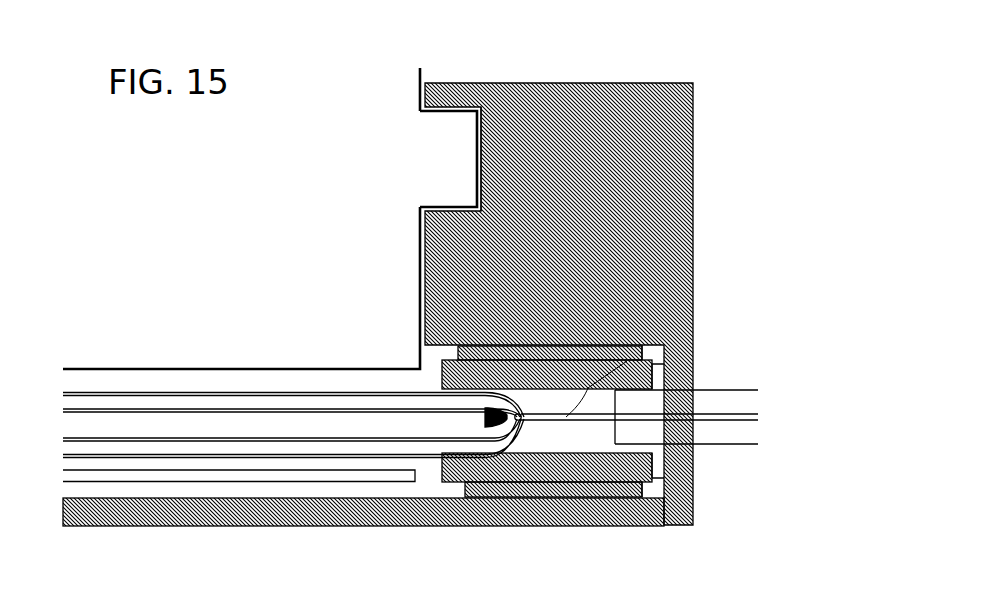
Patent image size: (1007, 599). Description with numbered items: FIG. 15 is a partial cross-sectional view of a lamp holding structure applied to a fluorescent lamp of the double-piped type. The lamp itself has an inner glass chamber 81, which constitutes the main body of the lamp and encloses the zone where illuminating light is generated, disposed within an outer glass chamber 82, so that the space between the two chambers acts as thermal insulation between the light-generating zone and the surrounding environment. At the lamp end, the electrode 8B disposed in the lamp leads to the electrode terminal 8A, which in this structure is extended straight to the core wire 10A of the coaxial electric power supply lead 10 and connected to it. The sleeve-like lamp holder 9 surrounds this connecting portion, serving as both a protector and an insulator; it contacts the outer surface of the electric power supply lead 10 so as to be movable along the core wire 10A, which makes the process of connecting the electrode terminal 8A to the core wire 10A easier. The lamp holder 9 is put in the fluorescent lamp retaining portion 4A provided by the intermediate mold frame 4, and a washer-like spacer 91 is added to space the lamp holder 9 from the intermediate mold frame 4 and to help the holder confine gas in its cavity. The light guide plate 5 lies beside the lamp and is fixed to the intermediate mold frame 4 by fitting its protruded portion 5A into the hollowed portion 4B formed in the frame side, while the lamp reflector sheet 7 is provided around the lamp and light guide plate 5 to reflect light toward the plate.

The intermediate mold frame 4 is at (582, 188).
The fluorescent lamp retaining portion 4A is at (196, 491).
The hollowed portion 4B is at (482, 129).
The light guide plate 5 is at (242, 188).
The protruded portion 5A is at (455, 178).
The lamp reflector sheet 7 is at (122, 478).
The glass chamber 81 is at (270, 441).
The glass chamber 82 is at (327, 458).
The electrode terminal 8A is at (662, 350).
The electrode 8B is at (484, 417).
The lamp holder 9 is at (538, 462).
The washer-like spacer 91 is at (442, 360).
The electric power supply lead 10 is at (705, 438).
The core wire 10A is at (717, 417).